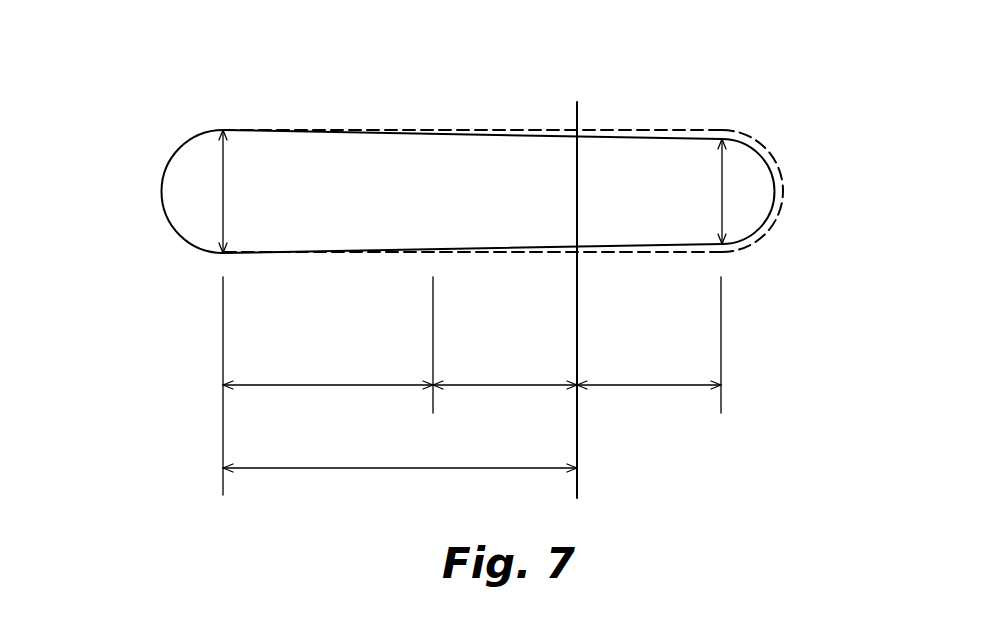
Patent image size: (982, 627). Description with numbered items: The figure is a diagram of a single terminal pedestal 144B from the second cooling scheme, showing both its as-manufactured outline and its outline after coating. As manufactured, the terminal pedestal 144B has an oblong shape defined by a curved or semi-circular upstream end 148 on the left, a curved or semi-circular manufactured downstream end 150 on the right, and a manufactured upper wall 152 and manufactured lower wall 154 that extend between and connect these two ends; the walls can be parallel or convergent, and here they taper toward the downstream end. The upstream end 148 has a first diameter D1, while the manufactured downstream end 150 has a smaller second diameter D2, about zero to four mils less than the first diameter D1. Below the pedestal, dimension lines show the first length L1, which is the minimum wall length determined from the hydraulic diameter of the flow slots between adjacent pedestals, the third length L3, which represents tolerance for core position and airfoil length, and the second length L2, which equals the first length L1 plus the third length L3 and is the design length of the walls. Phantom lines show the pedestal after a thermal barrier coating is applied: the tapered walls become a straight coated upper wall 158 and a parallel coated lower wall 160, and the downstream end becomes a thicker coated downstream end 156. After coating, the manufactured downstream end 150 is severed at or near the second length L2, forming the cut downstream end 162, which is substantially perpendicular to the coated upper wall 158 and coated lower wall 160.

The terminal pedestal 144B is at (118, 100).
The upstream end 148 is at (164, 205).
The manufactured downstream end 150 is at (776, 188).
The manufactured upper wall 152 is at (497, 133).
The manufactured lower wall 154 is at (496, 248).
The coated downstream end 156 is at (550, 196).
The coated upper wall 158 is at (628, 127).
The coated lower wall 160 is at (640, 253).
The cut downstream end 162 is at (575, 177).
The first diameter D1 is at (226, 177).
The second diameter D2 is at (722, 170).
The first length L1 is at (327, 387).
The second length L2 is at (372, 470).
The third length L3 is at (503, 387).